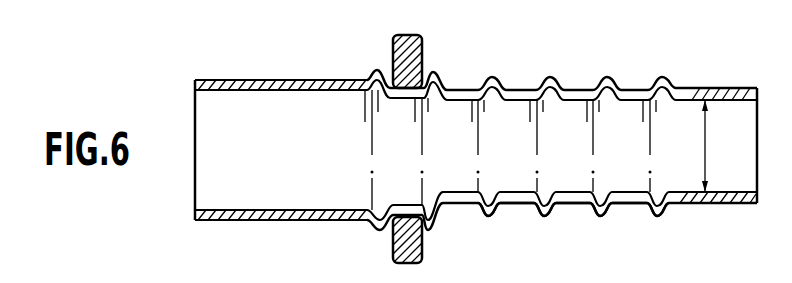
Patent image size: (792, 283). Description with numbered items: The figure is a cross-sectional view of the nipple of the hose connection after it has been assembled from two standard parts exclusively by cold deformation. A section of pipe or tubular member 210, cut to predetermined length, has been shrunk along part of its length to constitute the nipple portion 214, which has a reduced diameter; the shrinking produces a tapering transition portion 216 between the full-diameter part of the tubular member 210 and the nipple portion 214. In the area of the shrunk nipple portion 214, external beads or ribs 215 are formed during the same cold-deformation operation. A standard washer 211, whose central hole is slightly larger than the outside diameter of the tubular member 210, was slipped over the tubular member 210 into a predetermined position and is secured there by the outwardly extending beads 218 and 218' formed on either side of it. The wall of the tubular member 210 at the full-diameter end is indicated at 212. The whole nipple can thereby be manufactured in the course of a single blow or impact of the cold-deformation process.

The tubular member 210 is at (337, 220).
The washer 211 is at (406, 36).
The wall of outer tube 212 is at (297, 80).
The nipple portion 214 is at (577, 86).
The beads or ribs 215 is at (497, 218).
The tapering transition portion 216 is at (427, 205).
The outwardly extending bead 218 is at (383, 116).
The outwardly extending bead 218' is at (452, 114).